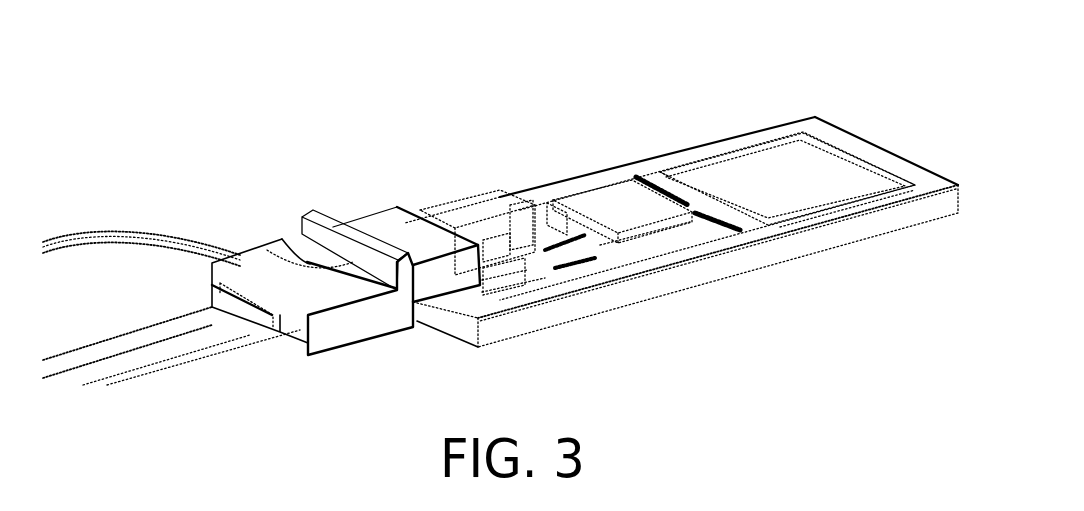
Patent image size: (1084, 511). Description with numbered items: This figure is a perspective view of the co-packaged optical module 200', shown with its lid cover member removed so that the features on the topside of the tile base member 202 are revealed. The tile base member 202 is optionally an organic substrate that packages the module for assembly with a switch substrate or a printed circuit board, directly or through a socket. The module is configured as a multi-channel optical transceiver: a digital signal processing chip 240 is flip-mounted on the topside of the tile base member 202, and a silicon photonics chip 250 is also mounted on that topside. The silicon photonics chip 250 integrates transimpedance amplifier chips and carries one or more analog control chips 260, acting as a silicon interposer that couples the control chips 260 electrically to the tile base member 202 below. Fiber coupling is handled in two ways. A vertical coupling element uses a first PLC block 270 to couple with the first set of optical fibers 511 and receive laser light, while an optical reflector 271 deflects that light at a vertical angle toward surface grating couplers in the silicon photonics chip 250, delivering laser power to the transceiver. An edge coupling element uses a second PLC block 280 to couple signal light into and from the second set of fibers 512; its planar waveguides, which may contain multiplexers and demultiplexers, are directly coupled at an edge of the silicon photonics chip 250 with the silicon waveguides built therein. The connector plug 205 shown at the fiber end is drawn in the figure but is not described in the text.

The co-packaged optical module 200' is at (335, 63).
The tile base member 202 is at (640, 285).
The connector plug 205 is at (287, 245).
The digital signal processing (DSP) chip 240 is at (735, 173).
The silicon photonics chip 250 is at (688, 235).
The control chip 260 is at (615, 197).
The first PLC block 270 is at (475, 203).
The optical reflector 271 is at (523, 203).
The second PLC block 280 is at (527, 258).
The first set of optical fibers 511 is at (178, 228).
The second set of fibers 512 is at (192, 323).